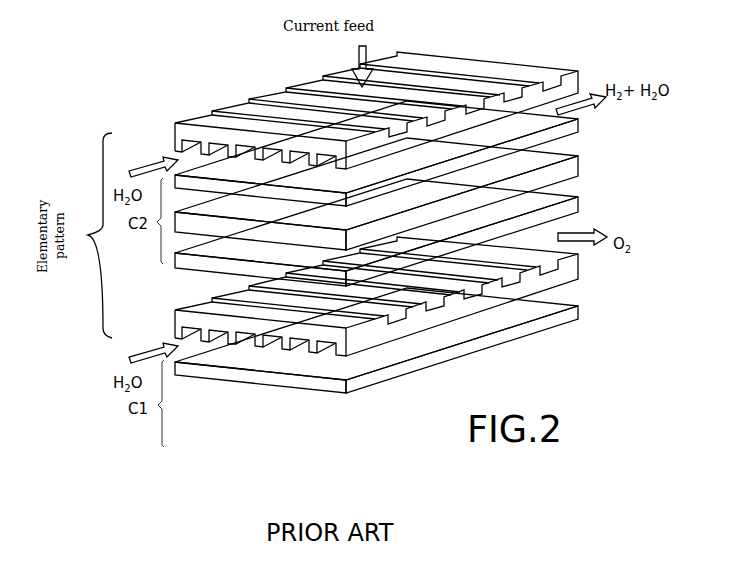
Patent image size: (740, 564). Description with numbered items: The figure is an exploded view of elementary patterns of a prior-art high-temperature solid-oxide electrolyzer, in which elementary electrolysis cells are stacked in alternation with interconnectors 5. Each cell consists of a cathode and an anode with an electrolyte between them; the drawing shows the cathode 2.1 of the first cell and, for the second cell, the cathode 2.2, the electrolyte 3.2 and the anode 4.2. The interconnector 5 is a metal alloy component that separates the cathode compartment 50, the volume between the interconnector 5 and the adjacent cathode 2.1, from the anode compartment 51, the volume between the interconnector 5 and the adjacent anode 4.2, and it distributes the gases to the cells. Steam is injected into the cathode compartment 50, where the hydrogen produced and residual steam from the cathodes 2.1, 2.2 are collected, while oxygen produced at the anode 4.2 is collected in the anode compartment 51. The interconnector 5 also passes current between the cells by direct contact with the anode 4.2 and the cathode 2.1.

The interconnector 5 is at (176, 143).
The cathode compartment 50 is at (178, 158).
The anode compartment 51 is at (212, 284).
The cathode 2.2 is at (578, 122).
The electrolyte 3.2 is at (578, 168).
The anode 4.2 is at (578, 204).
The cathode 2.1 is at (578, 311).